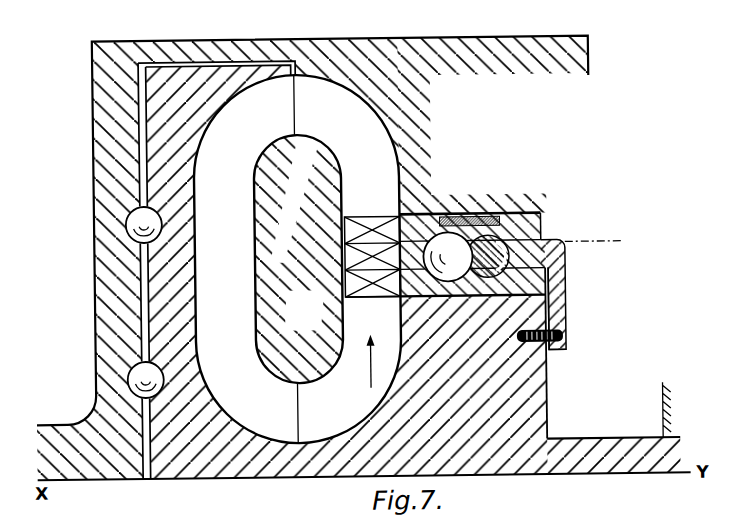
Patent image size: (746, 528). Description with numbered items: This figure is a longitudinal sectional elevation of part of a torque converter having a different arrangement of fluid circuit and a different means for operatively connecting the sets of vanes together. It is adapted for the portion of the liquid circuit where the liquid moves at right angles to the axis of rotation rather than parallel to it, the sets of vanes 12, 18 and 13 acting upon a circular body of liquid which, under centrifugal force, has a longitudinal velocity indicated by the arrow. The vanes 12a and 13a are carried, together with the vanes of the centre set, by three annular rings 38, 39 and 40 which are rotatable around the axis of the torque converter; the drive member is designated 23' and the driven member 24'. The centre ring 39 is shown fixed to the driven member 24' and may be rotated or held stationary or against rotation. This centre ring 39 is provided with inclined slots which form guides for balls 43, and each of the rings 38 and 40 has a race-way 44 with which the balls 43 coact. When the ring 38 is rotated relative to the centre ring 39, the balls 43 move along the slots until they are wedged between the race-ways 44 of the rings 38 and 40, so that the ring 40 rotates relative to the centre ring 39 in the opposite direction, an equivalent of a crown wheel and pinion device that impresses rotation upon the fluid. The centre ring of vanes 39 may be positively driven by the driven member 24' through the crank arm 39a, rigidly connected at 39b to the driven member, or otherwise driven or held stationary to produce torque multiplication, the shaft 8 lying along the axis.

The drive member 23' is at (361, 244).
The driven member 24' is at (401, 244).
The shaft axis 8 is at (345, 217).
The vanes 13a is at (360, 217).
The set of vanes 13 is at (345, 229).
The set of vanes 18 is at (345, 256).
The set of vanes 12 is at (345, 283).
The vanes 12a is at (354, 298).
The balls 43 is at (459, 214).
The race-way 44 is at (488, 214).
The annular ring 40 is at (543, 218).
The centre ring 39 is at (533, 254).
The annular ring 38 is at (528, 289).
The crank arm 39a is at (559, 311).
The rigid connection 39b is at (472, 300).